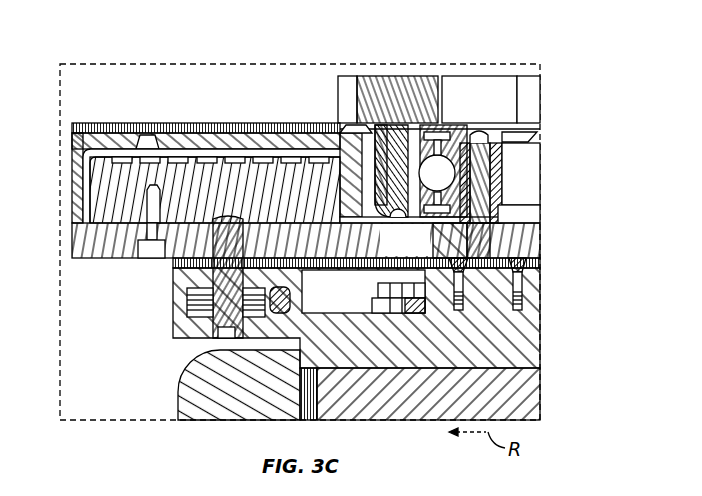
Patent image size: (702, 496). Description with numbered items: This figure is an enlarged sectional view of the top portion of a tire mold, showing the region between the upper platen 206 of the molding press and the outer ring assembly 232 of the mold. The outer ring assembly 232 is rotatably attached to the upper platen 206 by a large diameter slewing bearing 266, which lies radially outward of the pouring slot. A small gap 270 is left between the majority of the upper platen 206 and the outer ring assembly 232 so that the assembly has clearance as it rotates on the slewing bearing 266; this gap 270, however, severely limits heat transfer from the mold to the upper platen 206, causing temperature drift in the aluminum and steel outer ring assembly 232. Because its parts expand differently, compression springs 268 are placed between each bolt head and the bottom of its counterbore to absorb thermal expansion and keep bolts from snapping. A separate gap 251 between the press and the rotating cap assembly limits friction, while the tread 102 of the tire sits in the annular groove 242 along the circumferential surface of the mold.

The tread 102 is at (190, 393).
The upper platen 206 is at (497, 109).
The outer ring assembly 232 is at (170, 258).
The annular groove 242 is at (220, 343).
The gap 251 is at (530, 173).
The slewing bearing 266 is at (420, 128).
The compression springs 268 is at (187, 298).
The gap 270 is at (192, 152).